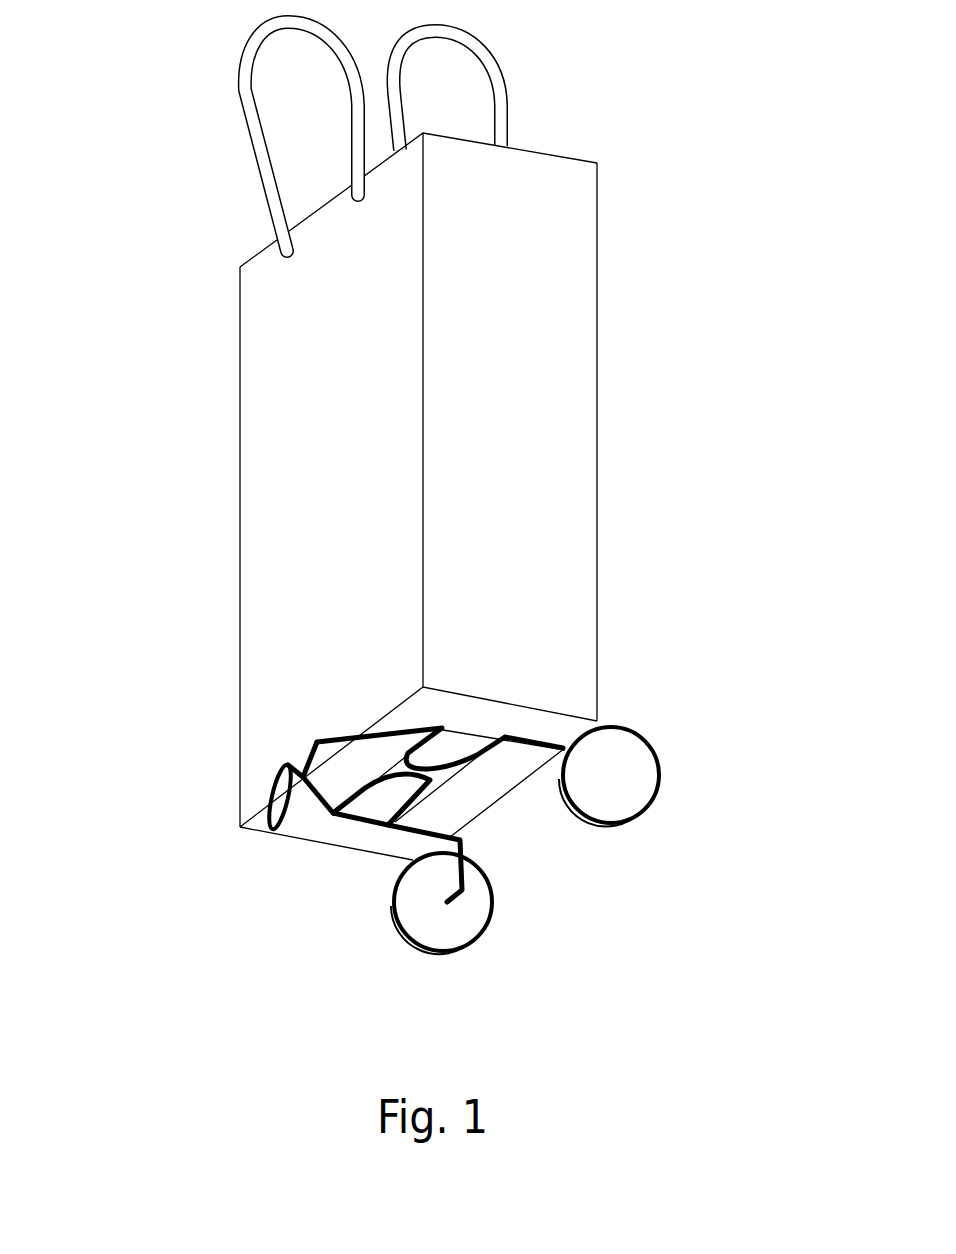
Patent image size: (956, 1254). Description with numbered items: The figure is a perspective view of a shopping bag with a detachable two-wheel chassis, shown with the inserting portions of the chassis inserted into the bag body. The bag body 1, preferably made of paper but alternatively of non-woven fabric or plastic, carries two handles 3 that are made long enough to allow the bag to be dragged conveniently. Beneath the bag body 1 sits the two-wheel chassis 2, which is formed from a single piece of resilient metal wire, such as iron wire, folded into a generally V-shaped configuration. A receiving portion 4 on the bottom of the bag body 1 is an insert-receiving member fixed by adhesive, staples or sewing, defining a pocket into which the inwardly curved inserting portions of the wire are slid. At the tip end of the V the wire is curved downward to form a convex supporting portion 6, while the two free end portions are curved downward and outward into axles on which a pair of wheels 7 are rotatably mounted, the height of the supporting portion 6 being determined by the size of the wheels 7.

The bag body 1 is at (708, 208).
The two-wheel chassis 2 is at (453, 867).
The handles 3 is at (245, 93).
The receiving portion 4 is at (443, 778).
The supporting portion 6 is at (243, 829).
The wheels 7 is at (615, 780).